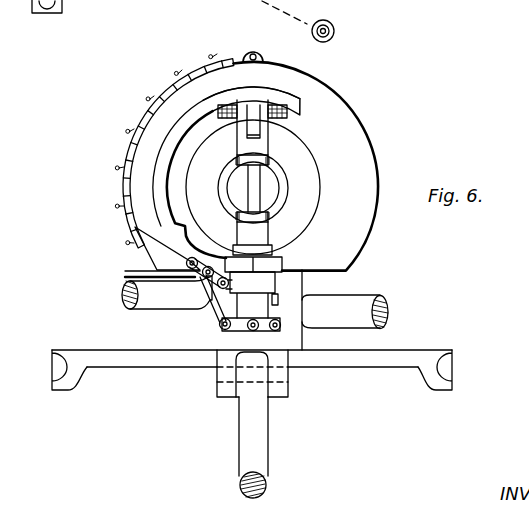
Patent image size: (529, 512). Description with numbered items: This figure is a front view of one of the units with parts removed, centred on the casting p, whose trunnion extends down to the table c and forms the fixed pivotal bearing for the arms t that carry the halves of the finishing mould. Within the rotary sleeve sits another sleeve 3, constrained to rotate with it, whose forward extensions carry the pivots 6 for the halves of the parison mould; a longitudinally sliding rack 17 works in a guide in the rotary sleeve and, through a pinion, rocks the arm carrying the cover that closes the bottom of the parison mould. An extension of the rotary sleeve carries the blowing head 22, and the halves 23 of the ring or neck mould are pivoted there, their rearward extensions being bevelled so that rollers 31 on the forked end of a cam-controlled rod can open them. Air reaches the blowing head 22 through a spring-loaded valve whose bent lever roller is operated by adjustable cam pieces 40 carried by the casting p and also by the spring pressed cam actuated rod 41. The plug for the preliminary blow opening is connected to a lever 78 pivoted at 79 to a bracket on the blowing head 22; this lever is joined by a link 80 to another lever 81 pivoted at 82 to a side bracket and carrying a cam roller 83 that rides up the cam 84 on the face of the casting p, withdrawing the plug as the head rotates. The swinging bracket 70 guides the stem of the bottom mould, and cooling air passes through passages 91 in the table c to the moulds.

The spring pressed cam actuated rod 41 is at (253, 50).
The roller 31 is at (222, 104).
The casting p is at (337, 117).
The longitudinally sliding rack 17 is at (256, 136).
The pivots 6 is at (256, 182).
The sleeve 3 is at (288, 196).
The blowing head 22 is at (282, 216).
The halves of the ring or neck mould 23 is at (270, 265).
The adjustable cam pieces 40 is at (128, 147).
The cam 84 is at (153, 185).
The cam roller 83 is at (135, 227).
The lever 81 is at (207, 275).
The pivot 82 is at (124, 287).
The arms t is at (150, 303).
The link 80 is at (217, 310).
The lever 78 is at (235, 333).
The pivot 79 is at (280, 328).
The passages in the table 91 is at (63, 367).
The table c is at (130, 346).
The swinging bracket 70 is at (264, 445).